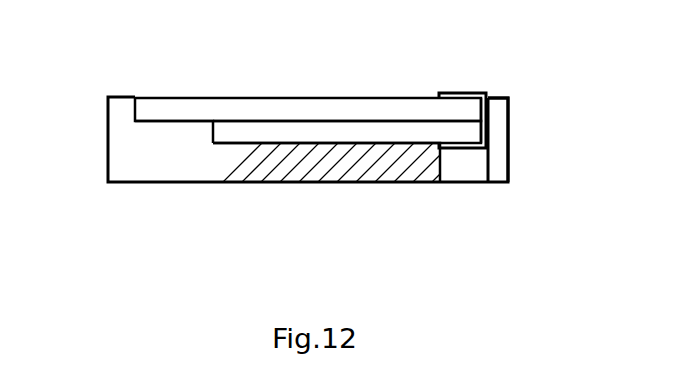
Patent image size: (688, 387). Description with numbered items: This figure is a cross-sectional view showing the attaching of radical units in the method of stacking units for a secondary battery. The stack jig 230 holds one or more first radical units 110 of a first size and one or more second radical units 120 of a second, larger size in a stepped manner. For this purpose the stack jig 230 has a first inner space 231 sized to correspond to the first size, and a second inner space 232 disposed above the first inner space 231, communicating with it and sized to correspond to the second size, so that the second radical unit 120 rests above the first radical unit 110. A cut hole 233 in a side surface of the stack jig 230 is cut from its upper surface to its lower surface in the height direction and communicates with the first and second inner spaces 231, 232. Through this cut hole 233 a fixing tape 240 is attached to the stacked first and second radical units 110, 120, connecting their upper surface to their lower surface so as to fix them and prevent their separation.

The first radical unit 110 is at (353, 130).
The second radical unit 120 is at (273, 108).
The stack jig 230 is at (120, 132).
The first inner space 231 is at (289, 143).
The second inner space 232 is at (173, 122).
The cut hole 233 is at (497, 120).
The fixing tape 240 is at (458, 97).